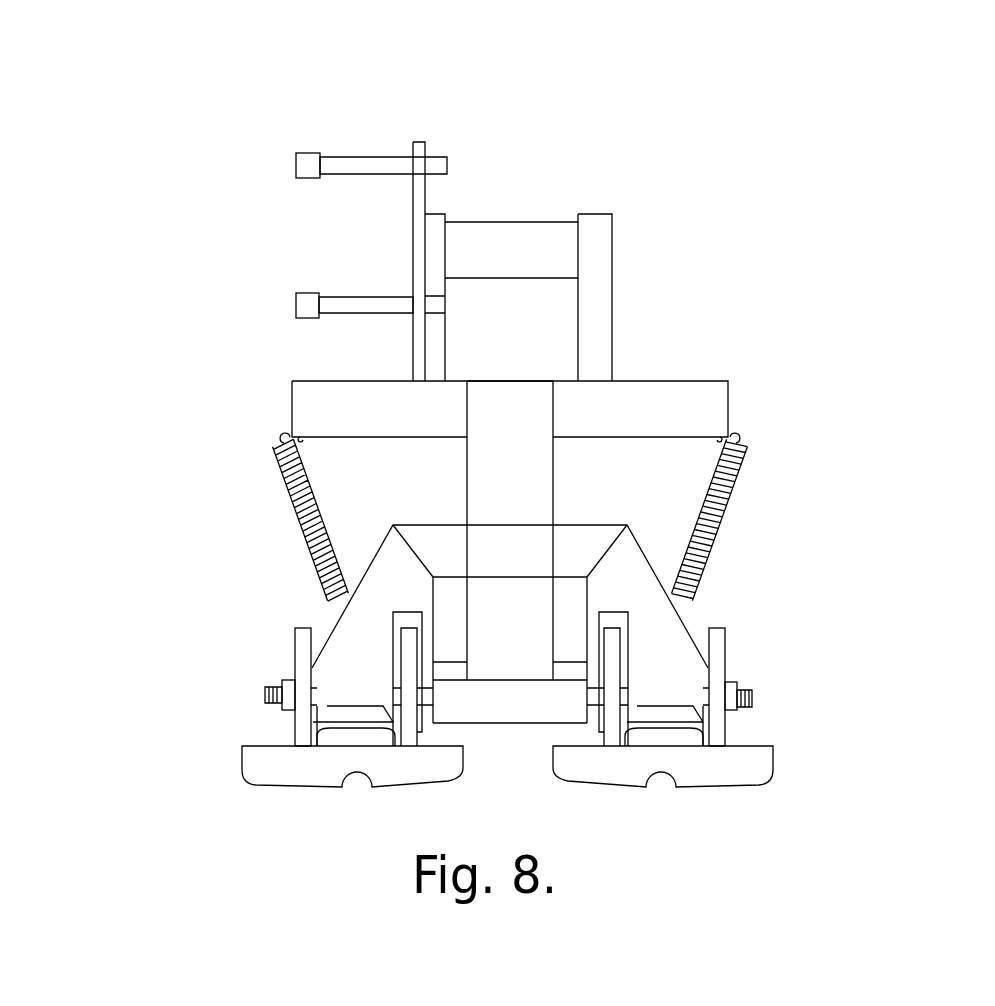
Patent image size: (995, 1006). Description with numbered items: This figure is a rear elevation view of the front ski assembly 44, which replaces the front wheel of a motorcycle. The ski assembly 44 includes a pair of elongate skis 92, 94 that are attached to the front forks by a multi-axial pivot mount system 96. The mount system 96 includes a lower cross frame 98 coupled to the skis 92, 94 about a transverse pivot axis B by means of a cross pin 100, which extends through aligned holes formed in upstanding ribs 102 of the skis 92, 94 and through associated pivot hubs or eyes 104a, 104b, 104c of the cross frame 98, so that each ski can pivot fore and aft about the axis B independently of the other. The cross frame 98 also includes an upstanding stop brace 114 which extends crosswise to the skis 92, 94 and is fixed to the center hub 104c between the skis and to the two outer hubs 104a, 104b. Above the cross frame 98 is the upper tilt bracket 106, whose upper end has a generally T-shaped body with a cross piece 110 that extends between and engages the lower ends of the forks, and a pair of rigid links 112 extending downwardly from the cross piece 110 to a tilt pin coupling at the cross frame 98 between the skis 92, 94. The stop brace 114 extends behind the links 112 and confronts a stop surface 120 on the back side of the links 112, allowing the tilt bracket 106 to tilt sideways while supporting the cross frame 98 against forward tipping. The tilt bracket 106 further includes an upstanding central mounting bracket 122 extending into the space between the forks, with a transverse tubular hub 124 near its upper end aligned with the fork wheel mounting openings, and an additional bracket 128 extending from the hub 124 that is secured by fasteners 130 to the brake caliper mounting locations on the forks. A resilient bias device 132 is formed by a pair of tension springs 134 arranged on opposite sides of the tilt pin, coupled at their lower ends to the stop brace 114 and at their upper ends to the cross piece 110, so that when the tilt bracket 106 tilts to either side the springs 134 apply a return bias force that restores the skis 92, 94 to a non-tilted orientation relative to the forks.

The ski assembly 44 is at (672, 86).
The ski 92 is at (778, 746).
The ski 94 is at (235, 744).
The multi-axial pivot mount system 96 is at (664, 287).
The cross frame 98 is at (694, 621).
The cross pin 100 is at (752, 697).
The upstanding rib 102 is at (300, 630).
The pivot hub 104a is at (680, 684).
The pivot hub 104b is at (348, 683).
The center hub 104c is at (520, 718).
The upper tilt bracket 106 is at (270, 372).
The cross piece 110 is at (687, 410).
The rigid link 112 is at (513, 425).
The stop brace 114 is at (388, 568).
The stop surface 120 is at (520, 487).
The central mounting bracket 122 is at (600, 220).
The tubular hub 124 is at (515, 243).
The additional bracket 128 is at (420, 142).
The fastener 130 is at (296, 165).
The resilient bias device 132 is at (754, 468).
The tension spring 134 is at (312, 558).
The transverse pivot axis B is at (262, 697).